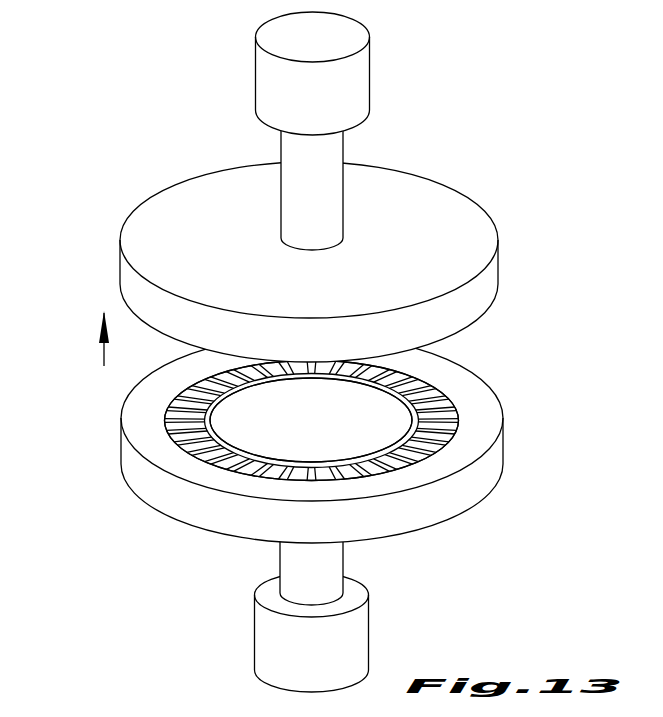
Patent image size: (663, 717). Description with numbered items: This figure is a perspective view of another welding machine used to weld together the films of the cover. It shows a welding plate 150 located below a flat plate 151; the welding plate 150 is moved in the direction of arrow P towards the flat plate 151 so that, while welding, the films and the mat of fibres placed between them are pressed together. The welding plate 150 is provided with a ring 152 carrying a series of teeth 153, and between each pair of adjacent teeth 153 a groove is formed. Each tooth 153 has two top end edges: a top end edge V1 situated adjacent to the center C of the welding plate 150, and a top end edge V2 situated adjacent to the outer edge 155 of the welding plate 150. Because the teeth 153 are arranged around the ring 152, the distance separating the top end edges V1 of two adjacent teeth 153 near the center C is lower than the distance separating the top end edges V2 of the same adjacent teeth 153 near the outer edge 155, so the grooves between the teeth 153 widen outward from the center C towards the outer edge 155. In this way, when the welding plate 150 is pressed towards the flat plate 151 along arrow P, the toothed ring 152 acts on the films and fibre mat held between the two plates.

The welding plate 150 is at (272, 460).
The flat plate 151 is at (491, 291).
The ring 152 is at (270, 415).
The teeth 153 is at (420, 384).
The outer edge 155 is at (205, 512).
The arrow P is at (103, 352).
The top end edge V1 is at (258, 386).
The top end edge V2 is at (238, 366).
The center C is at (311, 417).